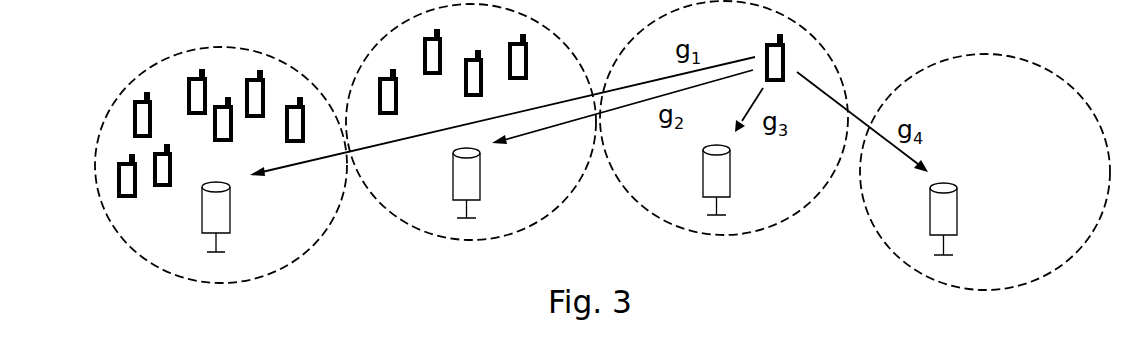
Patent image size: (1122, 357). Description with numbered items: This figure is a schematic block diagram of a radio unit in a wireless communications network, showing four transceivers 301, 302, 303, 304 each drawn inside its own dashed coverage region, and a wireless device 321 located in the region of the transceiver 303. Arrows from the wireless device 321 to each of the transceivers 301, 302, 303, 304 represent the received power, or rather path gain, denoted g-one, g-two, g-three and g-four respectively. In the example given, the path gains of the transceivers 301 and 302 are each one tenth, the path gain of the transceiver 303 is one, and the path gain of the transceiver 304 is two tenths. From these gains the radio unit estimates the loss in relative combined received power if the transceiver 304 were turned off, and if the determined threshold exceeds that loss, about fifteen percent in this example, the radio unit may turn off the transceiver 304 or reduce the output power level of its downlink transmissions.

The transceiver 301 is at (230, 224).
The transceiver 302 is at (480, 192).
The transceiver 303 is at (730, 190).
The transceiver 304 is at (957, 230).
The wireless device 321 is at (780, 36).